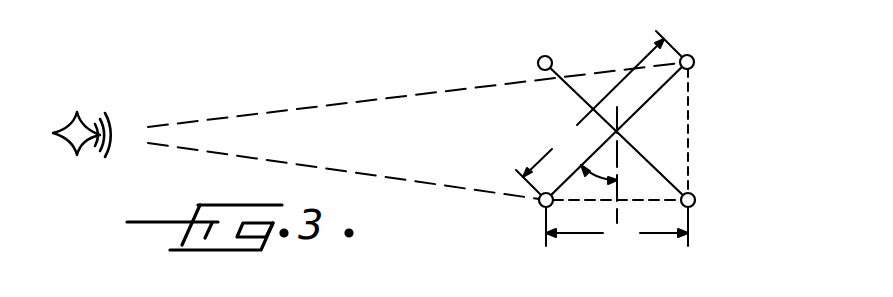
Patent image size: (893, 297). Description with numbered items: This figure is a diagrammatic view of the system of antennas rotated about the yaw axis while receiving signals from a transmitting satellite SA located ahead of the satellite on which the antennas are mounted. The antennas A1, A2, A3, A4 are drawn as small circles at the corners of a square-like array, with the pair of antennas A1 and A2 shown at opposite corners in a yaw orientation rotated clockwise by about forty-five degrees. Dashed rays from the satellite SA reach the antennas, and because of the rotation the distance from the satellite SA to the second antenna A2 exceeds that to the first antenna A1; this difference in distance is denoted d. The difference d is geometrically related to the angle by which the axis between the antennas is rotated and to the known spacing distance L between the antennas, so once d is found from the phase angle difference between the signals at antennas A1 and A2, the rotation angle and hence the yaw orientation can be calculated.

The transmitting satellite SA is at (65, 150).
The first antenna A1 is at (540, 207).
The second antenna A2 is at (694, 58).
The third microphone / sensor A3 is at (565, 37).
The fourth microphone / sensor A4 is at (695, 196).
The spacing distance between the antennas L is at (598, 112).
The difference in distance d is at (617, 229).